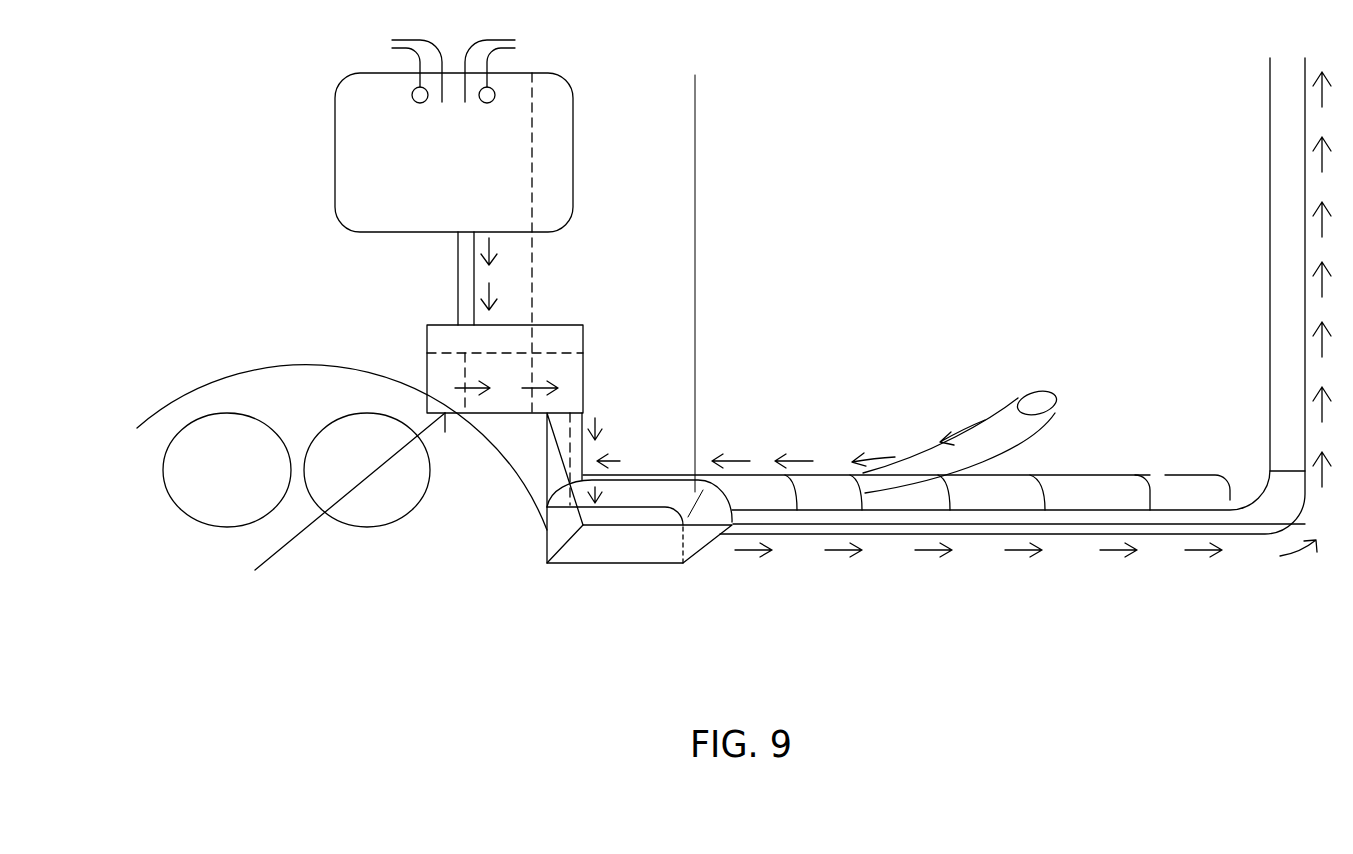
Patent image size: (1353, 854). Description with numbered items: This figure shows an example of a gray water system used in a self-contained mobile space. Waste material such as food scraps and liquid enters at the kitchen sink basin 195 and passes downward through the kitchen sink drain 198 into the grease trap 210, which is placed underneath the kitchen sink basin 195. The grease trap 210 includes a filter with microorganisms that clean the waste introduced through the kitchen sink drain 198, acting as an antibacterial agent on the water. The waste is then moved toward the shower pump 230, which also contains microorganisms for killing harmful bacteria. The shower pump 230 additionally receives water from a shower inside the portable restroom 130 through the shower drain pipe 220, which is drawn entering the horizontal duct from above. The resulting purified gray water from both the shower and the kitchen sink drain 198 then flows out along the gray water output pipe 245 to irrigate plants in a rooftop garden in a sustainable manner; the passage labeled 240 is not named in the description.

The portable restroom 130 is at (743, 160).
The kitchen sink basin 195 is at (574, 80).
The kitchen sink drain 198 is at (456, 271).
The grease trap 210 is at (585, 346).
The shower drain pipe 220 is at (1035, 392).
The shower pump 230 is at (648, 565).
The inlet duct 240 is at (590, 462).
The gray water output pipe 245 is at (1152, 520).